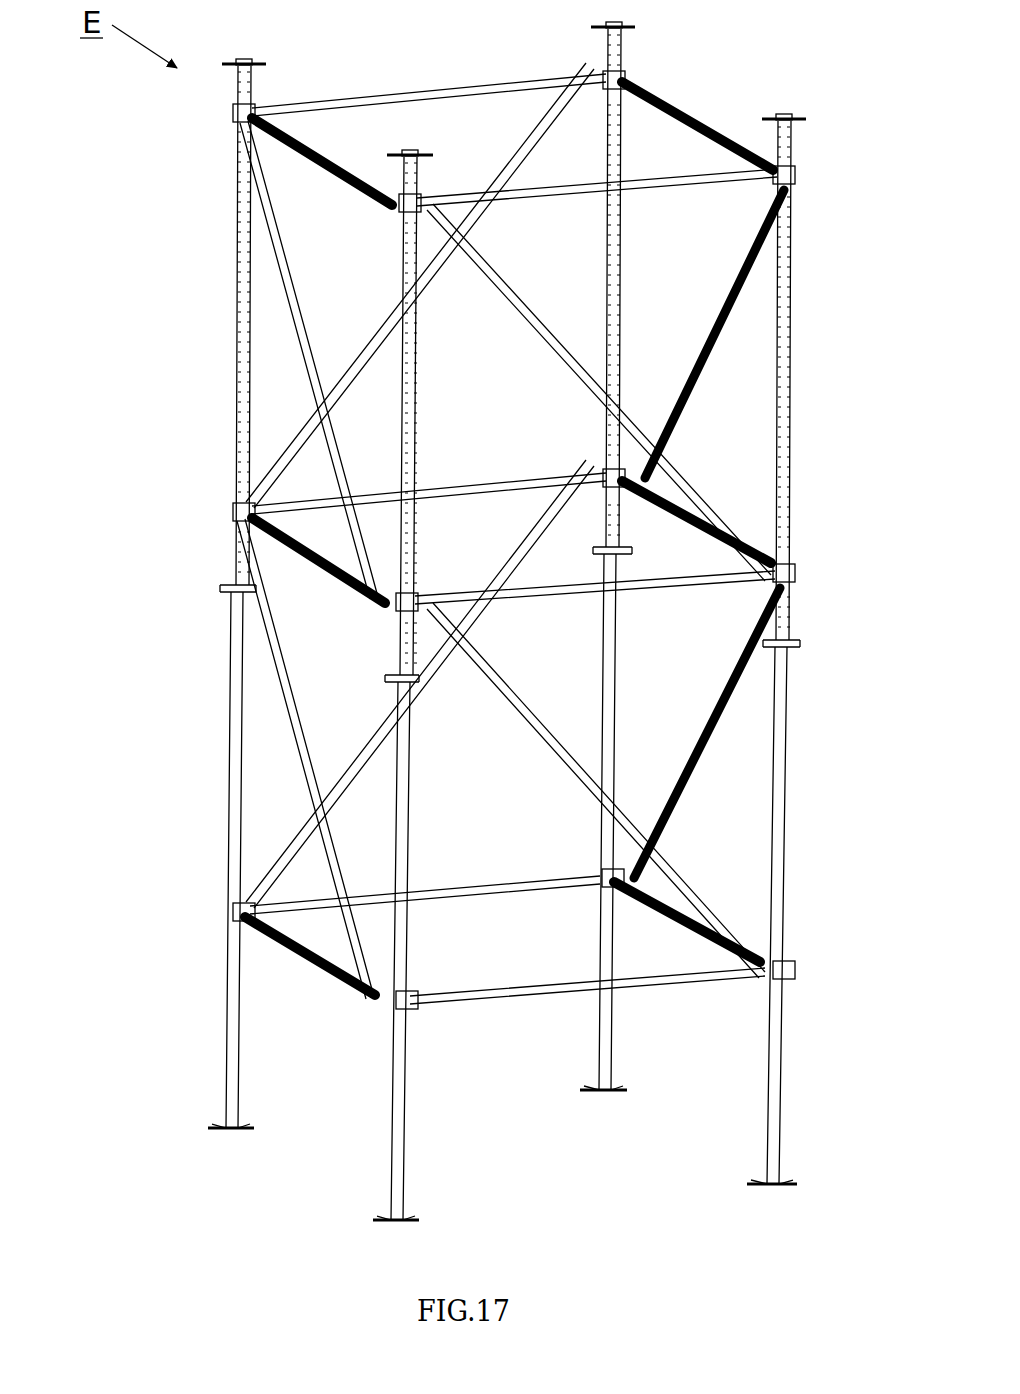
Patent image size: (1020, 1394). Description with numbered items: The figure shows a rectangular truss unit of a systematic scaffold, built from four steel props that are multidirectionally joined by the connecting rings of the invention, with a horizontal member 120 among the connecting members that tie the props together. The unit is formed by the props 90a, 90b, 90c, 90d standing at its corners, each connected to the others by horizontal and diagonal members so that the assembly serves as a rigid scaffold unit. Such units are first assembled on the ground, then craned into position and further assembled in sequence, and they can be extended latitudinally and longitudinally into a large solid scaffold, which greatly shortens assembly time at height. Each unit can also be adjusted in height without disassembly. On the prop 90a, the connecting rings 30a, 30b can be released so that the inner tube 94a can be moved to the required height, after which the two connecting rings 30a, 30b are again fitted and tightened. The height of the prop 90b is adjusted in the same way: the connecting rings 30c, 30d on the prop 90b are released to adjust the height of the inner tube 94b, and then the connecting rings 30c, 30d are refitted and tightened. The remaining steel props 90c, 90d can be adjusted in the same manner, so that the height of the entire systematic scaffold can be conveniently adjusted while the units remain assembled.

The connecting ring 30a is at (383, 611).
The connecting ring 30b is at (400, 213).
The connecting ring 30c is at (225, 528).
The connecting ring 30d is at (228, 127).
The inner tube 94a is at (405, 383).
The inner tube 94b is at (232, 372).
The prop 90a is at (381, 1139).
The prop 90b is at (213, 1003).
The steel prop 90c is at (763, 1080).
The steel prop 90d is at (592, 1045).
The horizontal ledger 120 is at (553, 1000).